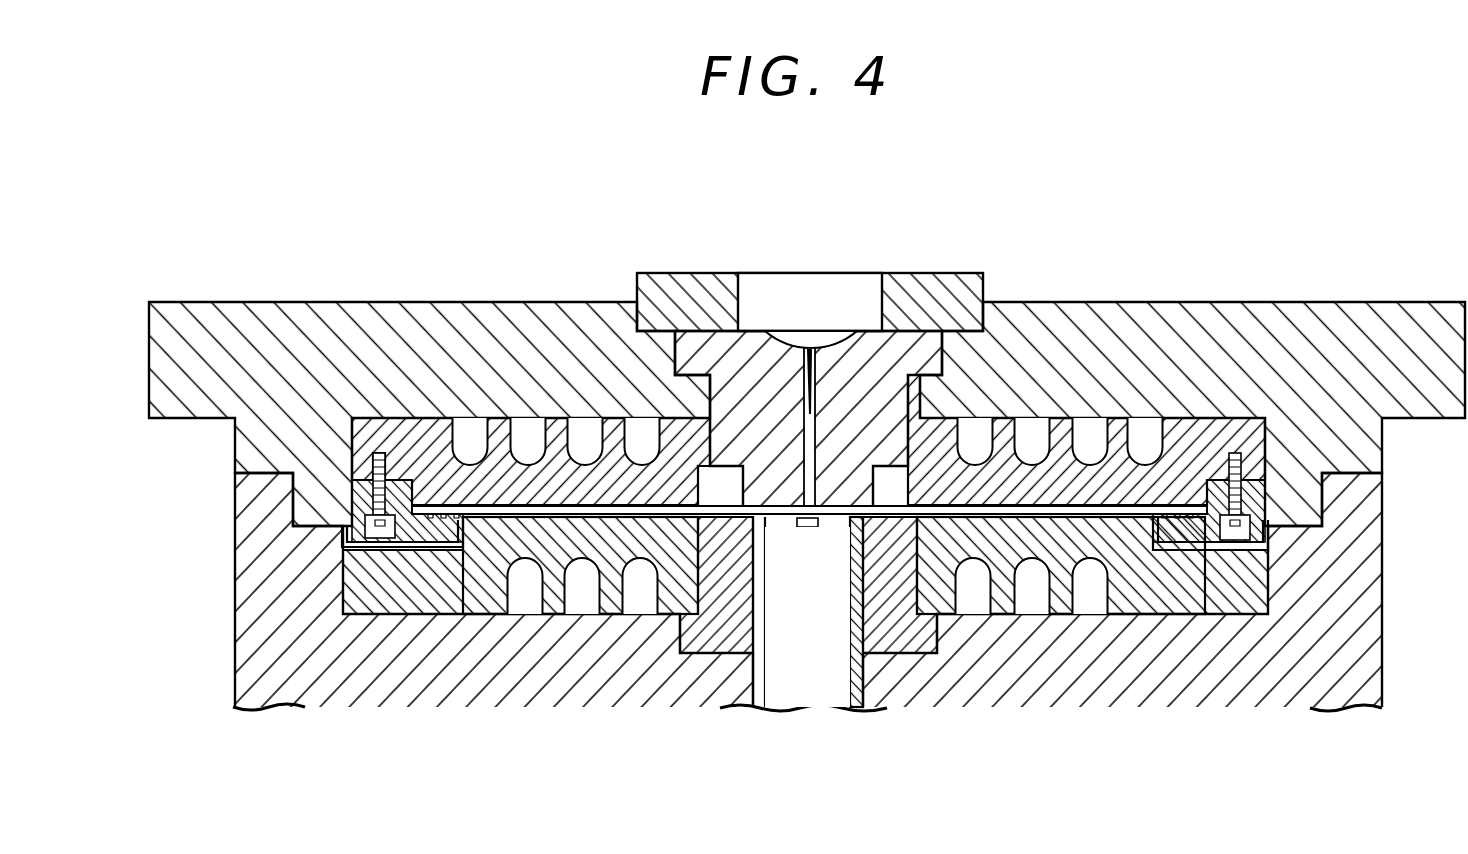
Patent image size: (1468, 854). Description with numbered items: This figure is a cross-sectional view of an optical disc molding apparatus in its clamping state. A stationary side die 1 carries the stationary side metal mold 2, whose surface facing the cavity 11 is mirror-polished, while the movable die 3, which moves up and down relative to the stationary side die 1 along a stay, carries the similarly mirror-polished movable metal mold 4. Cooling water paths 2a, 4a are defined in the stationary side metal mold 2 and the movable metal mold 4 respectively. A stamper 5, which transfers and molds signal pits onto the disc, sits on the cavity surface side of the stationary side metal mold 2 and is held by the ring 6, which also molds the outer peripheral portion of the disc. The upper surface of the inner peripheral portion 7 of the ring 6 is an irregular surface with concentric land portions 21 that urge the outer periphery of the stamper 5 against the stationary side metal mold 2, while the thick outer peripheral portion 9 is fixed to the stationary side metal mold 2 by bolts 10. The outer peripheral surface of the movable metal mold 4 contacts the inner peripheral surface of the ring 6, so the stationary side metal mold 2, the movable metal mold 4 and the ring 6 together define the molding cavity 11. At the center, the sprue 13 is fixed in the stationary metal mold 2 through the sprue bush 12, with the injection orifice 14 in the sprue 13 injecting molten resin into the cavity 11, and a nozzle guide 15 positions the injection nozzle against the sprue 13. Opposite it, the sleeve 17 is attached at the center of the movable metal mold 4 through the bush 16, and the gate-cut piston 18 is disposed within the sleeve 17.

The stationary side die 1 is at (1322, 317).
The stationary side metal mold 2 is at (1180, 440).
The cooling water path 2a is at (1043, 440).
The movable die 3 is at (1305, 660).
The movable metal mold 4 is at (1135, 580).
The cooling water path 4a is at (1043, 587).
The stamper 5 is at (1083, 457).
The ring 6 is at (1187, 540).
The inner peripheral portion 7 is at (1180, 530).
The thick outer peripheral portion 9 is at (1257, 498).
The bolt 10 is at (1247, 460).
The cavity 11 is at (930, 600).
The sprue bush 12 is at (650, 445).
The sprue 13 is at (748, 392).
The injection orifice 14 is at (813, 350).
The nozzle guide 15 is at (940, 298).
The bush 16 is at (705, 628).
The sleeve 17 is at (757, 672).
The gate-cut piston 18 is at (817, 677).
The land portion 21 is at (1222, 455).